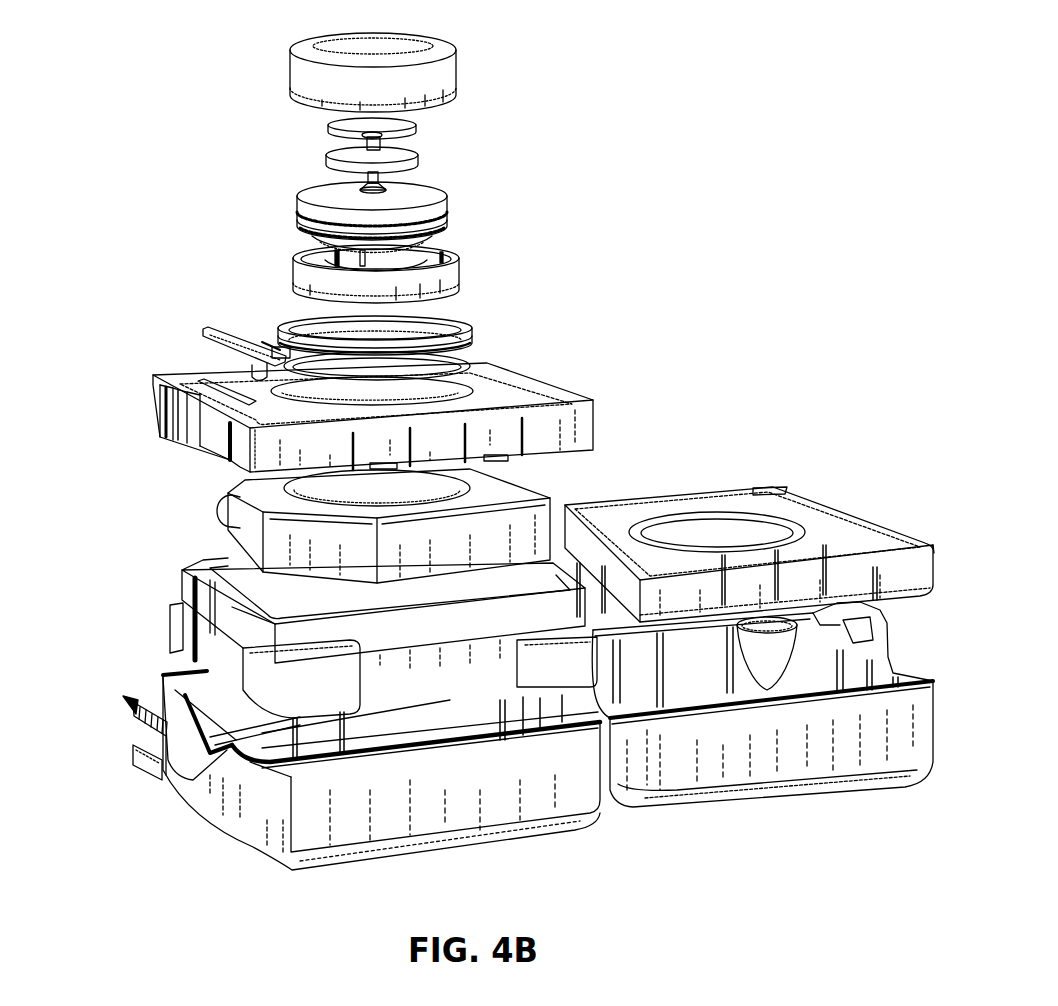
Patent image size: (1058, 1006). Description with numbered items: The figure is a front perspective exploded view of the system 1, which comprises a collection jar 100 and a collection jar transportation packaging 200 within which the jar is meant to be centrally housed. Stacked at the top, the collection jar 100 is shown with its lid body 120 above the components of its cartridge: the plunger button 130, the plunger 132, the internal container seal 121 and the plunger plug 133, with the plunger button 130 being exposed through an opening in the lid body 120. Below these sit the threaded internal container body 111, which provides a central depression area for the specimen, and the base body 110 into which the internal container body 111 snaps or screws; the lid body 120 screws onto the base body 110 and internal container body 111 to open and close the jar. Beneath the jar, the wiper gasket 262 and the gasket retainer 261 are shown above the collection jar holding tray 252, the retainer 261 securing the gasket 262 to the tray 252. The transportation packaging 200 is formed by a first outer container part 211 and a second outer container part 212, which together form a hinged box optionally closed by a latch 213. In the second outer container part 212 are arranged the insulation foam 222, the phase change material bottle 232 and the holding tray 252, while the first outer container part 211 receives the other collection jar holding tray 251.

The system 1 is at (609, 128).
The collection jar 100 is at (503, 203).
The base body 110 is at (310, 287).
The internal container body 111 is at (436, 222).
The lid body 120 is at (306, 54).
The internal container seal 121 is at (330, 160).
The plunger button 130 is at (400, 147).
The plunger 132 is at (412, 146).
The plunger plug 133 is at (355, 183).
The transportation packaging 200 is at (655, 410).
The first outer container part 211 is at (840, 763).
The second outer container part 212 is at (217, 793).
The latch 213 is at (137, 722).
The insulation foam 222 is at (207, 640).
The phase change material bottle 232 is at (240, 527).
The collection jar holding tray 251 is at (805, 512).
The collection jar holding tray 252 is at (517, 383).
The gasket retainer 261 is at (207, 331).
The wiper gasket 262 is at (460, 331).